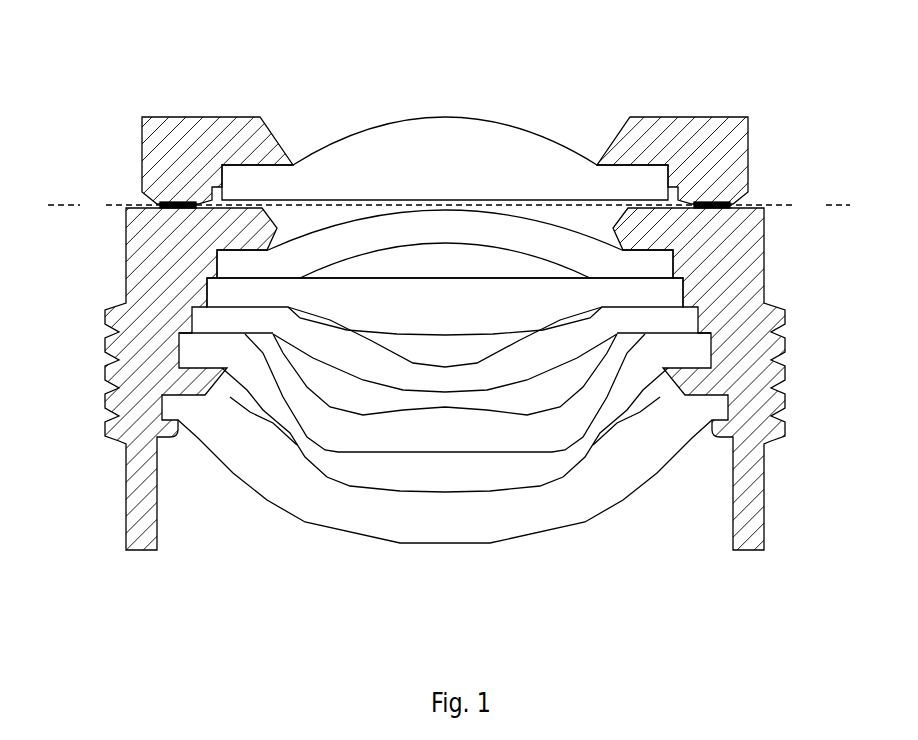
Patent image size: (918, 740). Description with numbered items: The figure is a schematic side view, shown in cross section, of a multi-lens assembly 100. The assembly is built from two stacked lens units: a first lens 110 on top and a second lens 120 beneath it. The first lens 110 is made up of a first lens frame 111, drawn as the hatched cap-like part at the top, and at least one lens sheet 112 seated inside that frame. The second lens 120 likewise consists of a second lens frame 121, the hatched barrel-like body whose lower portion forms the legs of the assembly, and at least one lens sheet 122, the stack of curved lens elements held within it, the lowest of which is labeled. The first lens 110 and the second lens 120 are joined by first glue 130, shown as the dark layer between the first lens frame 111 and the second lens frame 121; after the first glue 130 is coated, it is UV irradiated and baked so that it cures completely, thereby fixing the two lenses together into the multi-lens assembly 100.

The multi-lens assembly 100 is at (522, 82).
The first lens 110 is at (120, 164).
The first lens frame 111 is at (727, 160).
The lens sheet 112 is at (513, 152).
The second lens 120 is at (118, 268).
The second lens frame 121 is at (745, 512).
The lens sheet 122 is at (523, 514).
The first glue 130 is at (738, 202).